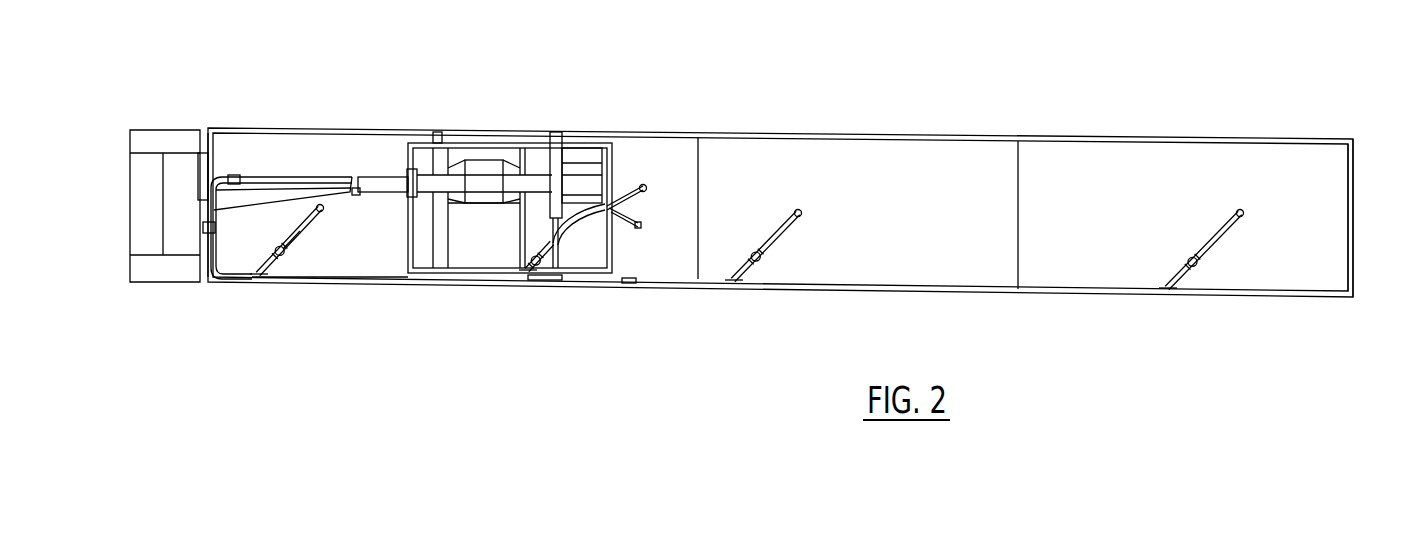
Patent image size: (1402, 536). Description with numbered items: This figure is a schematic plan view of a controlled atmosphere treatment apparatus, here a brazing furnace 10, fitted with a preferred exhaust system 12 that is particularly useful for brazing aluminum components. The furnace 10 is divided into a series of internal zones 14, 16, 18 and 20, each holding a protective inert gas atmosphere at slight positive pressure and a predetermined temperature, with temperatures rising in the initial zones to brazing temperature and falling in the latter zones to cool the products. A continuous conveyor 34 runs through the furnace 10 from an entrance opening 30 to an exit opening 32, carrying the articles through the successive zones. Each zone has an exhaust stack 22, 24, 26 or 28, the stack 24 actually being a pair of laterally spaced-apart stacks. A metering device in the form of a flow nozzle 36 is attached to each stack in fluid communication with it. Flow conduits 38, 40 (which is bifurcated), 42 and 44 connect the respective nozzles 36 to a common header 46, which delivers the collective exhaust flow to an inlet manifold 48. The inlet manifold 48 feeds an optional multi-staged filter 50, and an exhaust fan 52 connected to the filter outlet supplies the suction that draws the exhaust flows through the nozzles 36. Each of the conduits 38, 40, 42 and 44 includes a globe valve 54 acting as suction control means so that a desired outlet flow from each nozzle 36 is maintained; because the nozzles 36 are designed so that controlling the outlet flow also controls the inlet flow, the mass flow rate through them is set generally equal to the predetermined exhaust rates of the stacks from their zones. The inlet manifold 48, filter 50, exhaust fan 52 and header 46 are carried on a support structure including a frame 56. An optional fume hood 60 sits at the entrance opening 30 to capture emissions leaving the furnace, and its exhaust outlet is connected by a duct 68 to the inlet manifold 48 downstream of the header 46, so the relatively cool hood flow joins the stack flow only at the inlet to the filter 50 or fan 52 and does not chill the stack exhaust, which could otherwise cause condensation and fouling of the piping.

The brazing furnace 10 is at (1138, 124).
The exhaust system 12 is at (358, 163).
The internal zone 14 is at (353, 268).
The internal zone 16 is at (667, 270).
The internal zone 18 is at (848, 268).
The internal zone 20 is at (1102, 268).
The exhaust stack 22 is at (327, 210).
The exhaust stack 24 is at (648, 192).
The exhaust stack 26 is at (802, 213).
The exhaust stack 28 is at (1243, 212).
The entrance opening 30 is at (180, 177).
The exit opening 32 is at (1365, 203).
The continuous conveyor 34 is at (175, 226).
The flow nozzle 36 is at (325, 213).
The flow conduit 38 is at (305, 221).
The flow conduit 40 is at (580, 220).
The flow conduit 42 is at (777, 240).
The flow conduit 44 is at (1217, 232).
The common header 46 is at (292, 274).
The inlet manifold 48 is at (388, 176).
The multi-staged filter 50 is at (483, 170).
The exhaust fan 52 is at (558, 162).
The globe valve 54 is at (275, 250).
The frame 56 is at (408, 220).
The fume hood 60 is at (200, 163).
The duct 68 is at (277, 200).